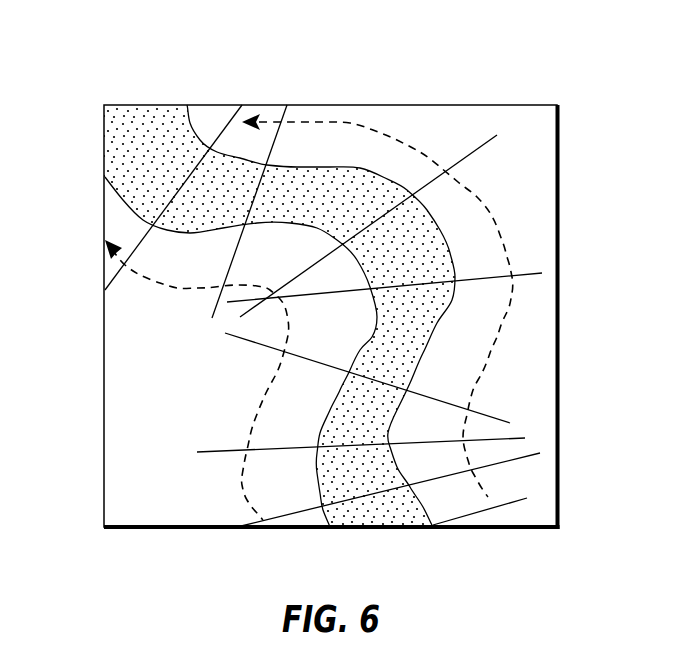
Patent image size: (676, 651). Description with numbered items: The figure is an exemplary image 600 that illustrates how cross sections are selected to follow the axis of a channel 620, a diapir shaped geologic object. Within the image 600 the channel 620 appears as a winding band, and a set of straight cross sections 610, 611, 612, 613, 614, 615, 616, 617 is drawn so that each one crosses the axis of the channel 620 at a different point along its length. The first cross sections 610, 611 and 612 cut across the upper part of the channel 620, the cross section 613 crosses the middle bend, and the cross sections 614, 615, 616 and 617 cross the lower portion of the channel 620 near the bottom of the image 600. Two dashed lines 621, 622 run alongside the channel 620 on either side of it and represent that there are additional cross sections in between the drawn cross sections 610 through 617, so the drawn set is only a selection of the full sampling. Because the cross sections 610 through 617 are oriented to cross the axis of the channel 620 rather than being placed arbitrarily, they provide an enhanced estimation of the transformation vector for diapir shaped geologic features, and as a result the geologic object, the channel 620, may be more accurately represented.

The image 600 is at (163, 105).
The cross section 610 is at (230, 122).
The cross section 611 is at (279, 130).
The cross section 612 is at (485, 144).
The cross section 613 is at (523, 275).
The cross section 614 is at (488, 415).
The cross section 615 is at (220, 450).
The cross section 616 is at (243, 522).
The cross section 617 is at (502, 505).
The channel 620 is at (147, 183).
The dashed line 621 is at (165, 287).
The dashed line 622 is at (493, 202).